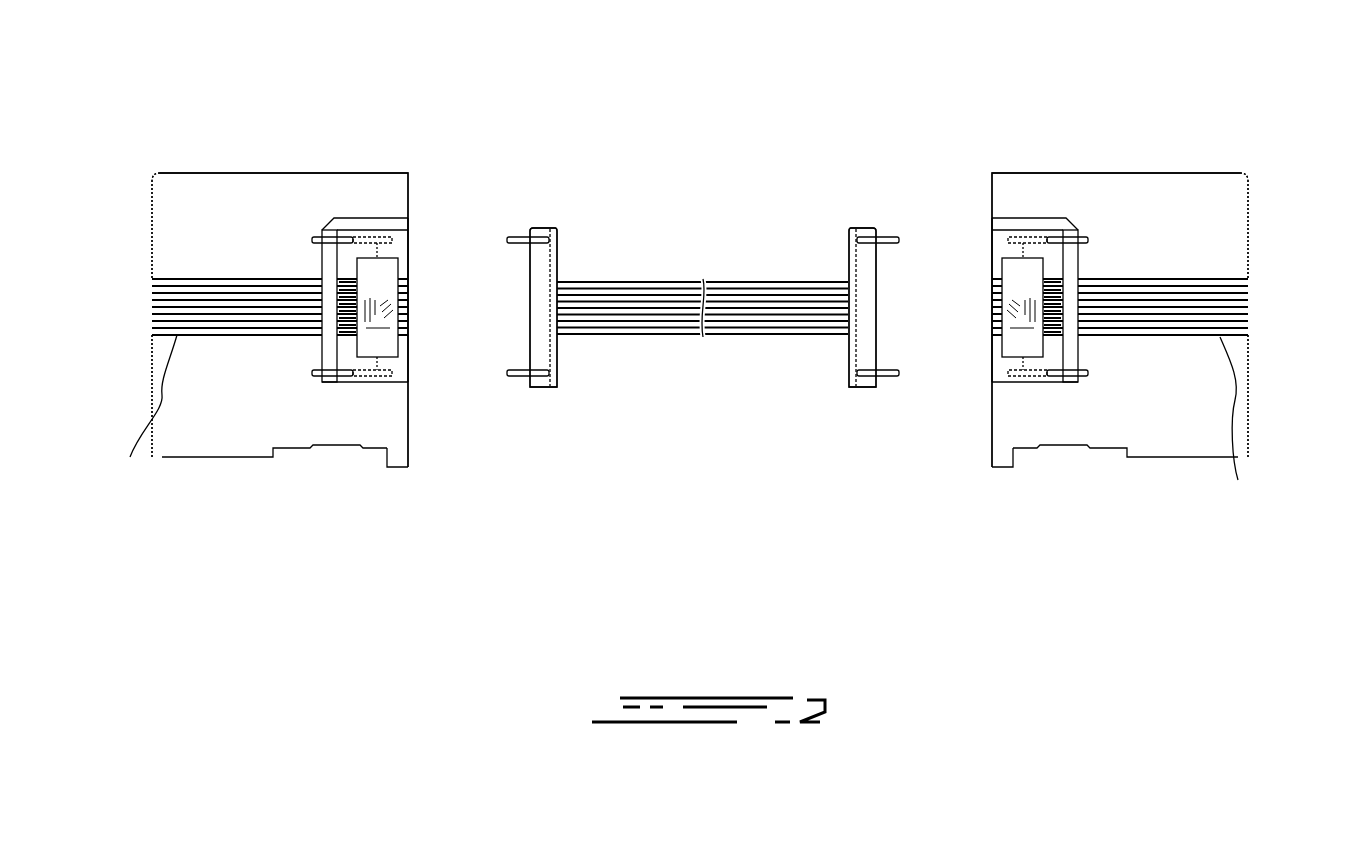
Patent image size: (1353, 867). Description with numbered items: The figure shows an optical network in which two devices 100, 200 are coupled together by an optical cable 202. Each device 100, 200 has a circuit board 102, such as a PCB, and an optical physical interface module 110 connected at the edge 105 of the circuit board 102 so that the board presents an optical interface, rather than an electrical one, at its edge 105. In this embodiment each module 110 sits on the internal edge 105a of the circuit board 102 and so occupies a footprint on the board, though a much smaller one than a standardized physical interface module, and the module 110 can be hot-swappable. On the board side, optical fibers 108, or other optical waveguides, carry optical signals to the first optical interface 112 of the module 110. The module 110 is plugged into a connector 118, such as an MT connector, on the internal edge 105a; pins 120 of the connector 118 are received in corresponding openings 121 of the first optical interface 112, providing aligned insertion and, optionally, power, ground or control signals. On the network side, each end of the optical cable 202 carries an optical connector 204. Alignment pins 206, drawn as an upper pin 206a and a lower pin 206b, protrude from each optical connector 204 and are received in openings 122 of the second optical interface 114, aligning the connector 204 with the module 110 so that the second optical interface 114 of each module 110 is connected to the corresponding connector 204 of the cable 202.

The device 100 is at (200, 150).
The device 200 is at (1222, 165).
The circuit board 102 is at (213, 410).
The edge of the circuit board 105 is at (377, 160).
The internal edge of the circuit board 105a is at (400, 463).
The optical fibers 108 is at (160, 278).
The optical physical interface module 110 is at (407, 217).
The first optical interface 112 is at (336, 334).
The second optical interface 114 is at (412, 275).
The connector 118 is at (393, 213).
The pins 120 is at (330, 397).
The openings 121 is at (347, 383).
The openings 122 is at (410, 374).
The optical cable 202 is at (748, 282).
The optical connector 204 is at (548, 227).
The pins 206 is at (519, 397).
The upper plug flange 206a is at (523, 237).
The lower plug flange 206b is at (512, 376).